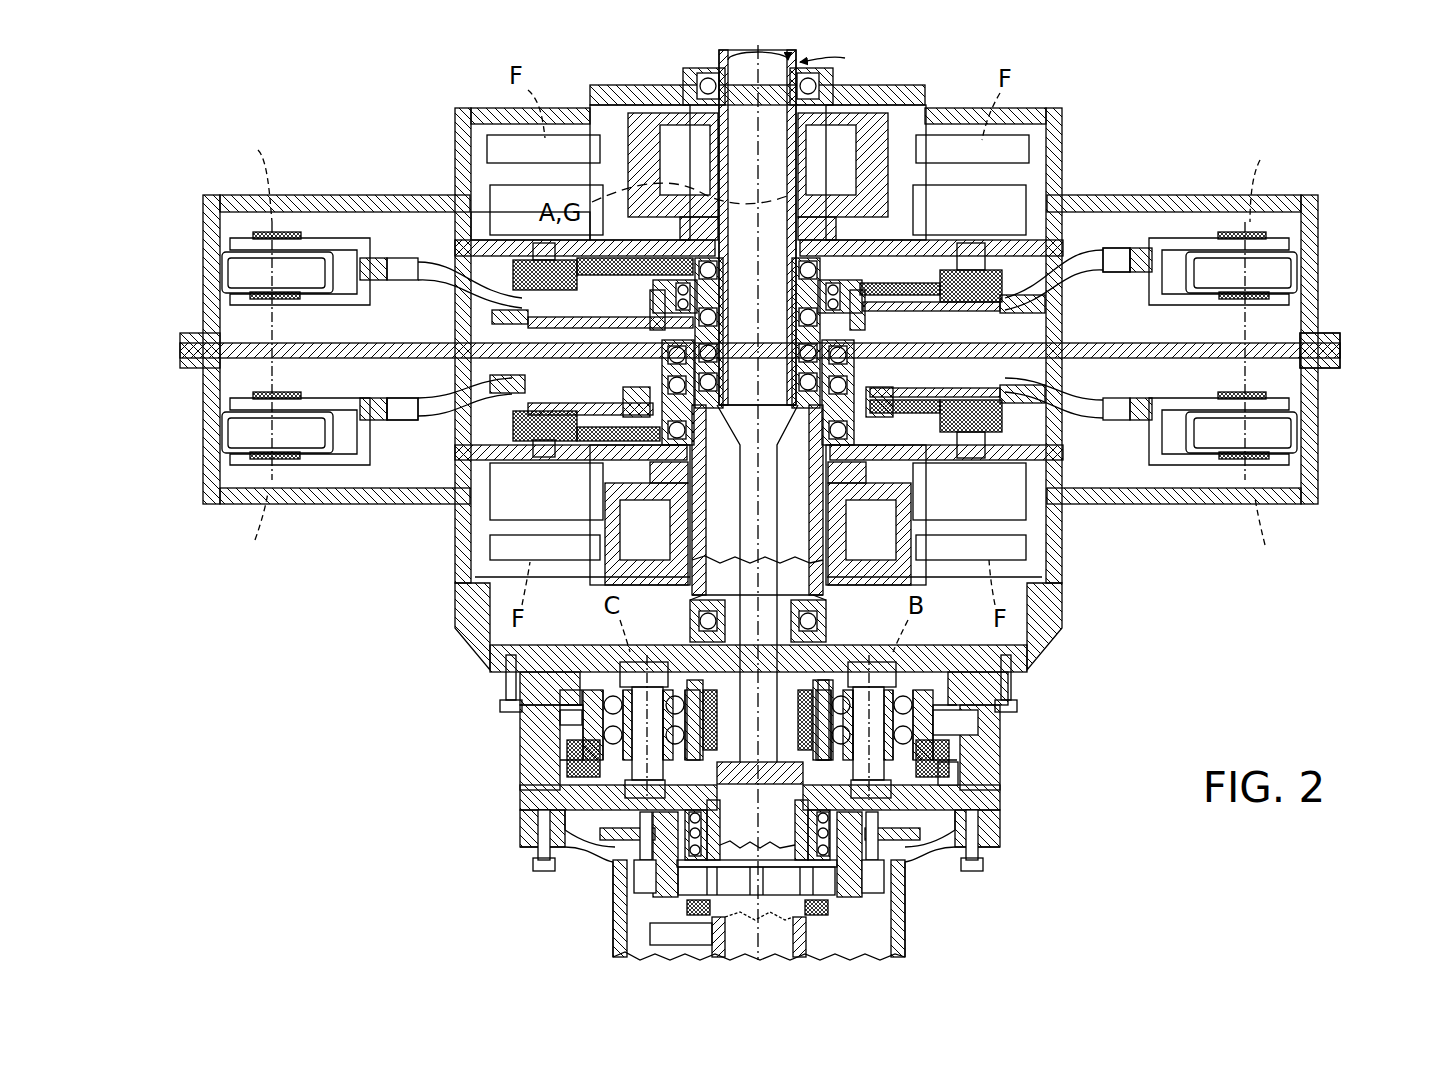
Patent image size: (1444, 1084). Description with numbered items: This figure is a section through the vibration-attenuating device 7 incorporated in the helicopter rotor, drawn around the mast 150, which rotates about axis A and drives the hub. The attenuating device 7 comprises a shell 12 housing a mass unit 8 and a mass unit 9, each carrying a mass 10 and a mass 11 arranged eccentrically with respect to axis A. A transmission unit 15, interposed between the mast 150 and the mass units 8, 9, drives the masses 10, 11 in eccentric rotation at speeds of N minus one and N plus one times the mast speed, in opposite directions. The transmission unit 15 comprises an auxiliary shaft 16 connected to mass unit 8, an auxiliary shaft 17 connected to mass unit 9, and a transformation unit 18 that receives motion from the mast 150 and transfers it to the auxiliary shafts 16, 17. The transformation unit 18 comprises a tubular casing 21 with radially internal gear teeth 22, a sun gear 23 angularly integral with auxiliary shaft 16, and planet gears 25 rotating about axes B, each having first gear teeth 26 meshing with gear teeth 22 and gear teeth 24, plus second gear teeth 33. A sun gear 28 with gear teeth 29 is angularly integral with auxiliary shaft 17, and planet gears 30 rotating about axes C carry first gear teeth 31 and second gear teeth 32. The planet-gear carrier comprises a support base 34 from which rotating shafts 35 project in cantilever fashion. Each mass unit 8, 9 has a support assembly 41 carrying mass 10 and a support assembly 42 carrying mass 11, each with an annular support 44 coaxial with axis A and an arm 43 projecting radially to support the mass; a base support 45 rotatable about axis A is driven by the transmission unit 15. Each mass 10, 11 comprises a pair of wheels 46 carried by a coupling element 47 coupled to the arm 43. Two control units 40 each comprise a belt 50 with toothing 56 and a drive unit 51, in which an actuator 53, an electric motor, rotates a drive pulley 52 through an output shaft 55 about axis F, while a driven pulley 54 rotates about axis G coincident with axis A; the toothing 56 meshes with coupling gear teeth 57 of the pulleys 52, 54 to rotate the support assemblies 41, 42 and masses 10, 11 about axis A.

The vibration-attenuating device 7 is at (1268, 127).
The mass unit 8 is at (167, 202).
The mass unit 9 is at (188, 518).
The mass 10 is at (245, 322).
The mass 11 is at (1335, 300).
The shell 12 is at (375, 202).
The transmission unit 15 is at (390, 838).
The auxiliary shaft 16 is at (740, 680).
The auxiliary shaft 17 is at (858, 530).
The transformation unit 18 is at (567, 655).
The tubular casing 21 is at (985, 741).
The gear teeth 22 is at (958, 765).
The sun gear 23 is at (768, 790).
The gear teeth 24 is at (720, 780).
The planet gear 25 is at (930, 790).
The first gear teeth 26 is at (958, 775).
The sun gear 28 is at (790, 675).
The gear teeth 29 is at (822, 700).
The planet gear 30 is at (580, 762).
The first gear teeth 31 is at (576, 725).
The second gear teeth 32 is at (578, 708).
The second gear teeth 33 is at (962, 722).
The support base 34 is at (597, 820).
The rotating shaft 35 is at (642, 680).
The control unit 40 is at (663, 153).
The support assembly 41 is at (416, 232).
The support assembly 42 is at (1100, 385).
The arm 43 is at (463, 290).
The annular support 44 is at (835, 290).
The base support 45 is at (475, 240).
The wheel 46 is at (243, 273).
The coupling element 47 is at (345, 295).
The belt 50 is at (717, 252).
The drive unit 51 is at (497, 139).
The drive pulley 52 is at (583, 262).
The actuator 53 is at (507, 153).
The driven pulley 54 is at (862, 316).
The output shaft 55 is at (537, 245).
The toothing 56 is at (640, 278).
The coupling gear teeth 57 is at (525, 278).
The mast 150 is at (730, 937).